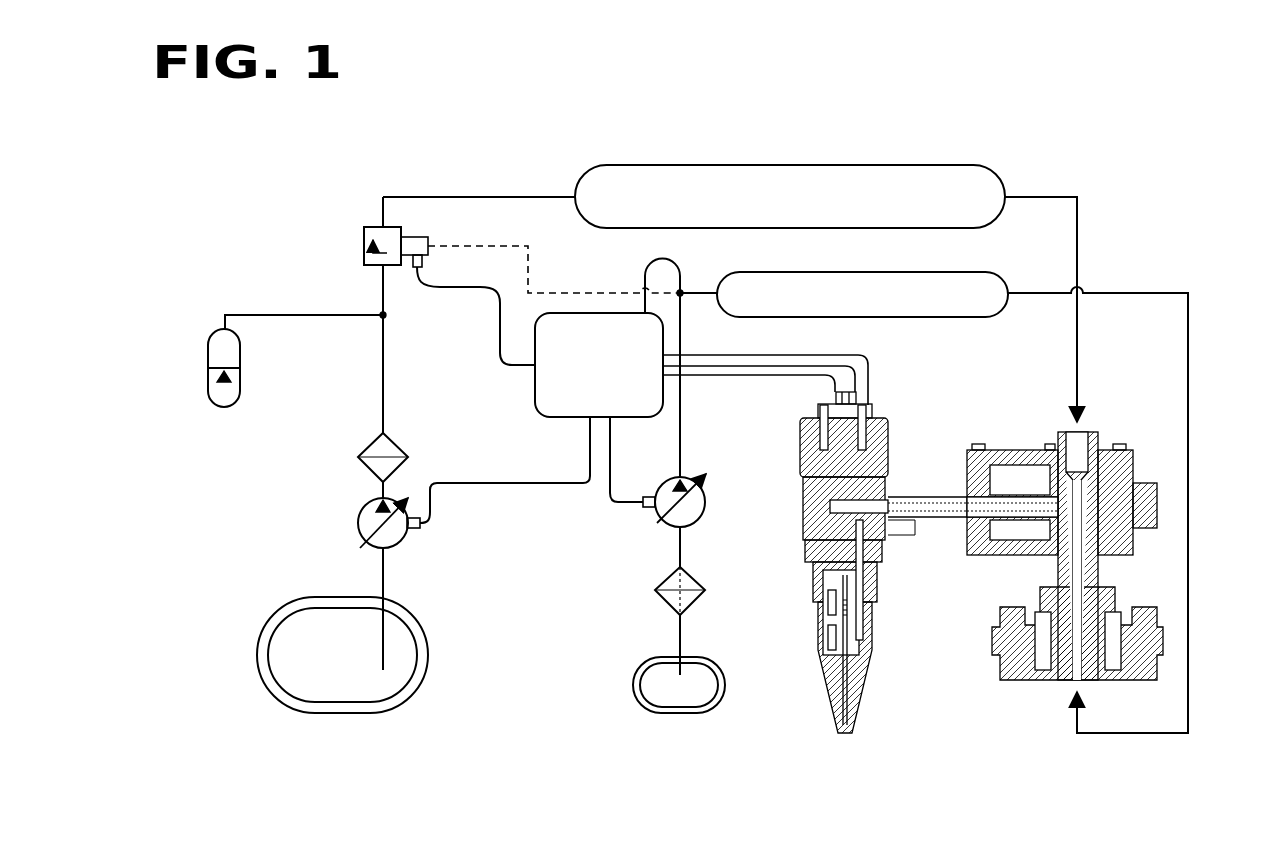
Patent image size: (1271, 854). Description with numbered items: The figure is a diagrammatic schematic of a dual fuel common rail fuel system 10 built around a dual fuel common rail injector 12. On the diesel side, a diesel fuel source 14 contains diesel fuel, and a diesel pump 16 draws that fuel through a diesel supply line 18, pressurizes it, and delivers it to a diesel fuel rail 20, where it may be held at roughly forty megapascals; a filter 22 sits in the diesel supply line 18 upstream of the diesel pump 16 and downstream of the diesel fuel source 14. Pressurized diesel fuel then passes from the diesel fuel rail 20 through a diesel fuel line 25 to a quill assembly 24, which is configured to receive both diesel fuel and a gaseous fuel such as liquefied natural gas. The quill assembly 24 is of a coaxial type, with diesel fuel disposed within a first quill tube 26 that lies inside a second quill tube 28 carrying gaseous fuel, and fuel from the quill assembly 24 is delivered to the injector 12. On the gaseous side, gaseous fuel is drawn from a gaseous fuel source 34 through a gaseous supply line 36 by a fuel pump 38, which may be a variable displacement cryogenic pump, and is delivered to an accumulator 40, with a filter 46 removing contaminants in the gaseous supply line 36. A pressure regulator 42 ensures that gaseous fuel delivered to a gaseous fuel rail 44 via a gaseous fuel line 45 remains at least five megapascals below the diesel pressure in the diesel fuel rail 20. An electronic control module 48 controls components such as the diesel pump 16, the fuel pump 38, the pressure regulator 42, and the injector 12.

The dual fuel common rail fuel system 10 is at (1146, 127).
The dual fuel common rail injector 12 is at (900, 400).
The diesel fuel source 14 is at (703, 675).
The diesel pump 16 is at (706, 505).
The diesel supply line 18 is at (683, 432).
The diesel fuel rail 20 is at (844, 294).
The filter 22 is at (705, 590).
The quill assembly 24 is at (1127, 414).
The diesel fuel line 25 is at (1188, 335).
The first quill tube 26 is at (903, 518).
The second quill tube 28 is at (905, 497).
The gaseous fuel source 34 is at (402, 672).
The gaseous supply line 36 is at (383, 336).
The fuel pump 38 is at (405, 545).
The accumulator 40 is at (240, 390).
The pressure regulator 42 is at (364, 240).
The gaseous fuel rail 44 is at (790, 196).
The gaseous fuel line 45 is at (1077, 226).
The filter 46 is at (406, 455).
The electronic control module 48 is at (535, 396).